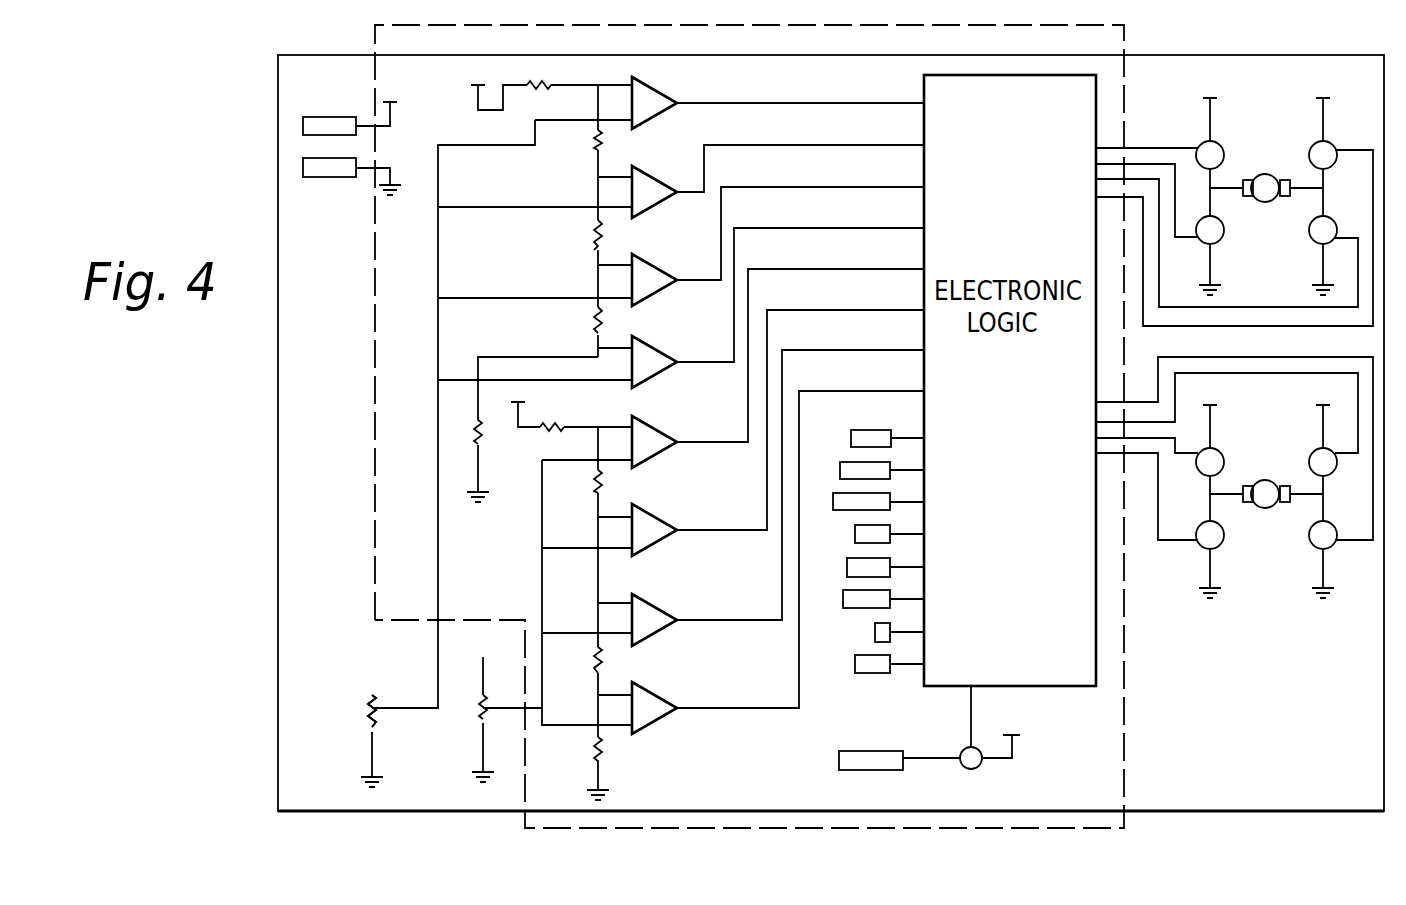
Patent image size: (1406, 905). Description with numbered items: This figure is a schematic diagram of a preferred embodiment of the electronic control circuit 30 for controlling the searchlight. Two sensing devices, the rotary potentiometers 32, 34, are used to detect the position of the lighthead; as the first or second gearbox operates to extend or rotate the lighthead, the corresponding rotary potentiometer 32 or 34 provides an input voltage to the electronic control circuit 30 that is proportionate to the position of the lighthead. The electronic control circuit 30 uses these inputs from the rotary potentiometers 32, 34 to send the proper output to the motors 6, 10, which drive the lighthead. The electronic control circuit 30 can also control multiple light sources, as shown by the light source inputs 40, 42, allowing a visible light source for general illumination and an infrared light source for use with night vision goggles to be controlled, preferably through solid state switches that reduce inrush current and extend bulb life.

The electronic control circuit 30 is at (1105, 27).
The motor 6 is at (1262, 175).
The motor 10 is at (1265, 506).
The light source input 40 is at (924, 599).
The light source input 42 is at (924, 632).
The rotary potentiometer 32 is at (372, 733).
The rotary potentiometer 34 is at (483, 720).